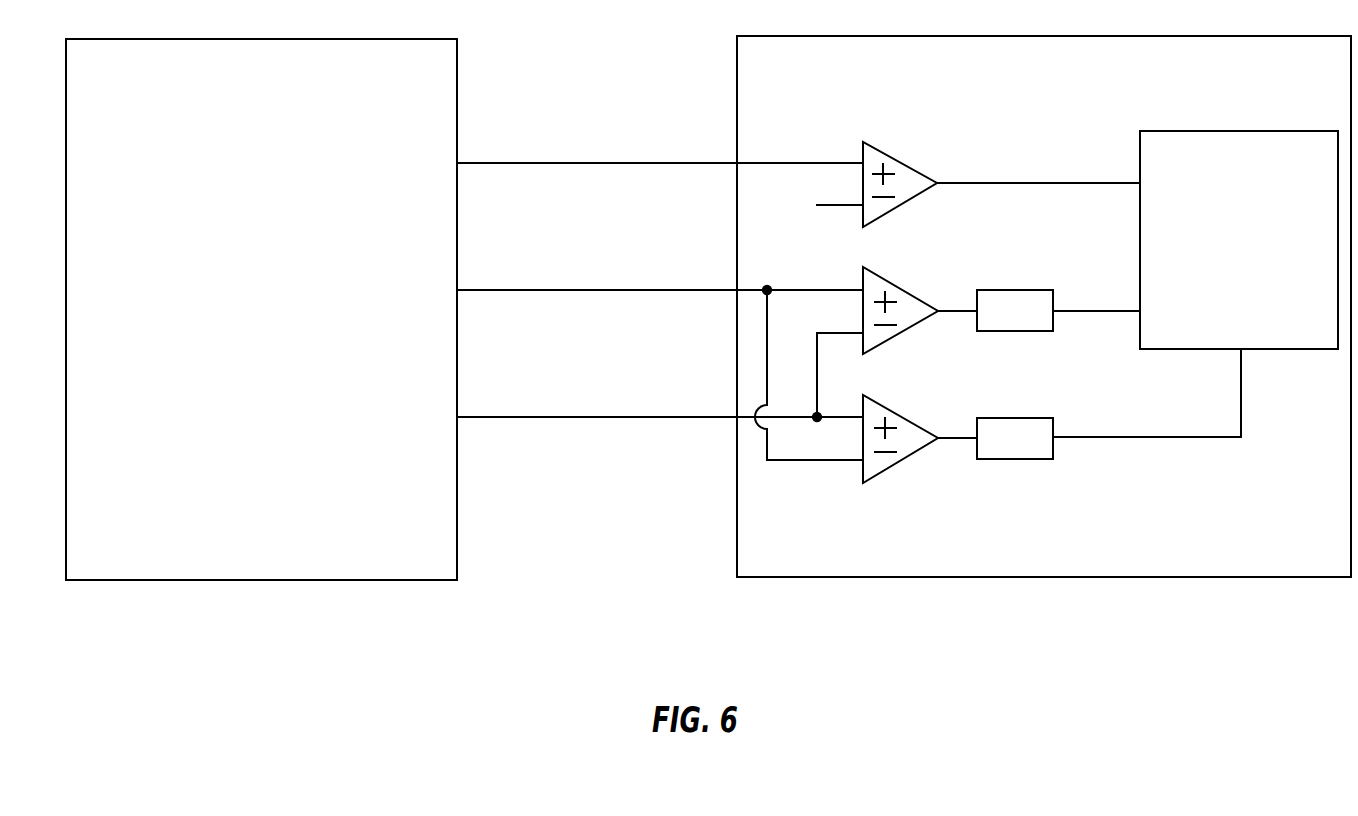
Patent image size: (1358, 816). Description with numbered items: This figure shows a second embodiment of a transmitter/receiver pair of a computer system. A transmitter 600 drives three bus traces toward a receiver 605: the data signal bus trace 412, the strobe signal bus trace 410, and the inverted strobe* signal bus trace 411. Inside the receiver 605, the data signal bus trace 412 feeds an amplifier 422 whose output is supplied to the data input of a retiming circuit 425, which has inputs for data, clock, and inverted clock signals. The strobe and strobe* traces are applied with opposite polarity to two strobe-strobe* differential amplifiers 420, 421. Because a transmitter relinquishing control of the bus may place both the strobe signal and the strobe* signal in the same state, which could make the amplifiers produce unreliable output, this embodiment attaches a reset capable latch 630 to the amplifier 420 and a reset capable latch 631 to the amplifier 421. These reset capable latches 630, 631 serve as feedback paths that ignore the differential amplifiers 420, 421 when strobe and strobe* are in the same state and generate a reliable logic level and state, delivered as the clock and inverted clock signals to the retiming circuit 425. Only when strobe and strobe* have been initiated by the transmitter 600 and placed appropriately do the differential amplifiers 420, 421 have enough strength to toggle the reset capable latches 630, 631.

The transmitter 600 is at (288, 347).
The receiver 605 is at (1068, 565).
The data signal bus trace 412 is at (660, 139).
The strobe signal bus trace 410 is at (660, 267).
The inverted strobe* signal bus trace 411 is at (660, 395).
The amplifier 422 is at (978, 169).
The differential amplifier 420 is at (899, 328).
The differential amplifier 421 is at (868, 386).
The reset capable latch 630 is at (1039, 329).
The reset capable latch 631 is at (1039, 457).
The retiming circuit 425 is at (1264, 300).